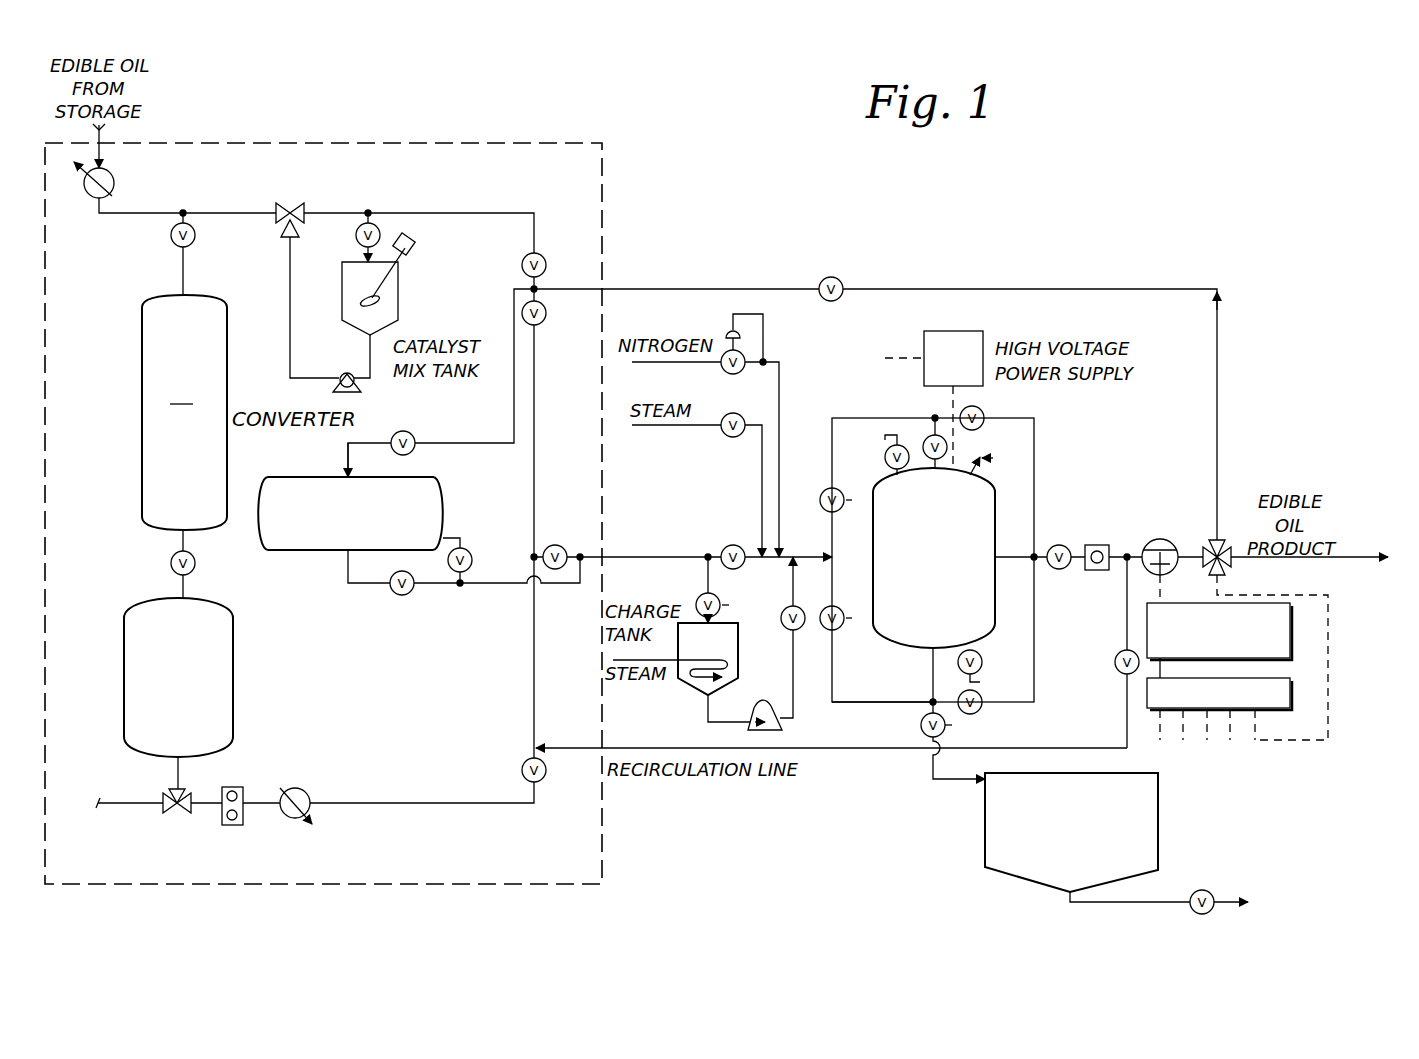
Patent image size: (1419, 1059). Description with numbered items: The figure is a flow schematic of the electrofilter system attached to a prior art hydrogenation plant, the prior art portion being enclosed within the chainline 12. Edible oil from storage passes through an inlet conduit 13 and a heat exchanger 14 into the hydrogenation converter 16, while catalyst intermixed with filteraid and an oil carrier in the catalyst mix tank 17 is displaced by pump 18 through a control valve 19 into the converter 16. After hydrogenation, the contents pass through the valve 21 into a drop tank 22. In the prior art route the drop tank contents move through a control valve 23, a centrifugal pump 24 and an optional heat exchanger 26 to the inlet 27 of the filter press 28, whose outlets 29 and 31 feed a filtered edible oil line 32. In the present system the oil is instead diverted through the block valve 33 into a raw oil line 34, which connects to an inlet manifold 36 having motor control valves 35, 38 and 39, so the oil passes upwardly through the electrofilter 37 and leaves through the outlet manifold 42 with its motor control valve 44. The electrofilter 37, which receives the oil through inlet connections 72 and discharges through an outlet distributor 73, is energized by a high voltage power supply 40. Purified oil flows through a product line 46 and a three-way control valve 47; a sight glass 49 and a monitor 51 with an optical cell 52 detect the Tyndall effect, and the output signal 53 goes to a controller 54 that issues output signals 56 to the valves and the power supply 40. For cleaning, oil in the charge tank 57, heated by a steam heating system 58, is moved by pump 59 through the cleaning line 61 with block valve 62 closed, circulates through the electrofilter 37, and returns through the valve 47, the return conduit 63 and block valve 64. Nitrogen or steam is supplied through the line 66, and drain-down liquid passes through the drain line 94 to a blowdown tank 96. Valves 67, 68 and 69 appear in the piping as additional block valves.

The chainline 12 is at (450, 886).
The inlet conduit 13 is at (104, 135).
The heat exchanger 14 is at (114, 178).
The hydrogenation converter 16 is at (184, 412).
The catalyst mix tank 17 is at (400, 300).
The pump 18 is at (344, 370).
The control valve 19 is at (293, 203).
The valve 21 is at (168, 565).
The drop tank 22 is at (235, 685).
The control valve 23 is at (173, 812).
The centrifugal pump 24 is at (235, 787).
The heat exchanger 26 is at (309, 793).
The inlet 27 is at (342, 455).
The filter press 28 is at (446, 500).
The outlet 29 is at (343, 585).
The outlet 31 is at (460, 540).
The filtered edible oil line 32 is at (483, 595).
The block valve 33 is at (556, 543).
The raw oil line 34 is at (650, 550).
The motor control valve 35 is at (845, 630).
The inlet manifold 36 is at (880, 700).
The electrofilter 37 is at (1000, 508).
The motor control valve 38 is at (985, 710).
The motor control valve 39 is at (921, 728).
The high voltage power supply 40 is at (924, 345).
The outlet manifold 42 is at (855, 418).
The motor control valve 44 is at (985, 412).
The product line 46 is at (1063, 545).
The three-way control valve 47 is at (1205, 547).
The sight glass 49 is at (1098, 545).
The monitor 51 is at (1290, 650).
The optical cell 52 is at (1160, 539).
The output signal 53 is at (1160, 668).
The controller 54 is at (1275, 710).
The output signals 56 is at (1162, 740).
The charge tank 57 is at (685, 685).
The steam heating system 58 is at (613, 660).
The pump 59 is at (780, 722).
The cleaning line 61 is at (788, 622).
The block valve 62 is at (733, 545).
The return conduit 63 is at (915, 289).
The block valve 64 is at (840, 280).
The nitrogen line 66 is at (780, 390).
The valve 67 is at (547, 262).
The valve 68 is at (547, 315).
The valve 69 is at (520, 765).
The inlet connections 72 is at (930, 665).
The outlet distributor 73 is at (935, 470).
The drain line 94 is at (945, 790).
The blowdown tank 96 is at (1160, 845).